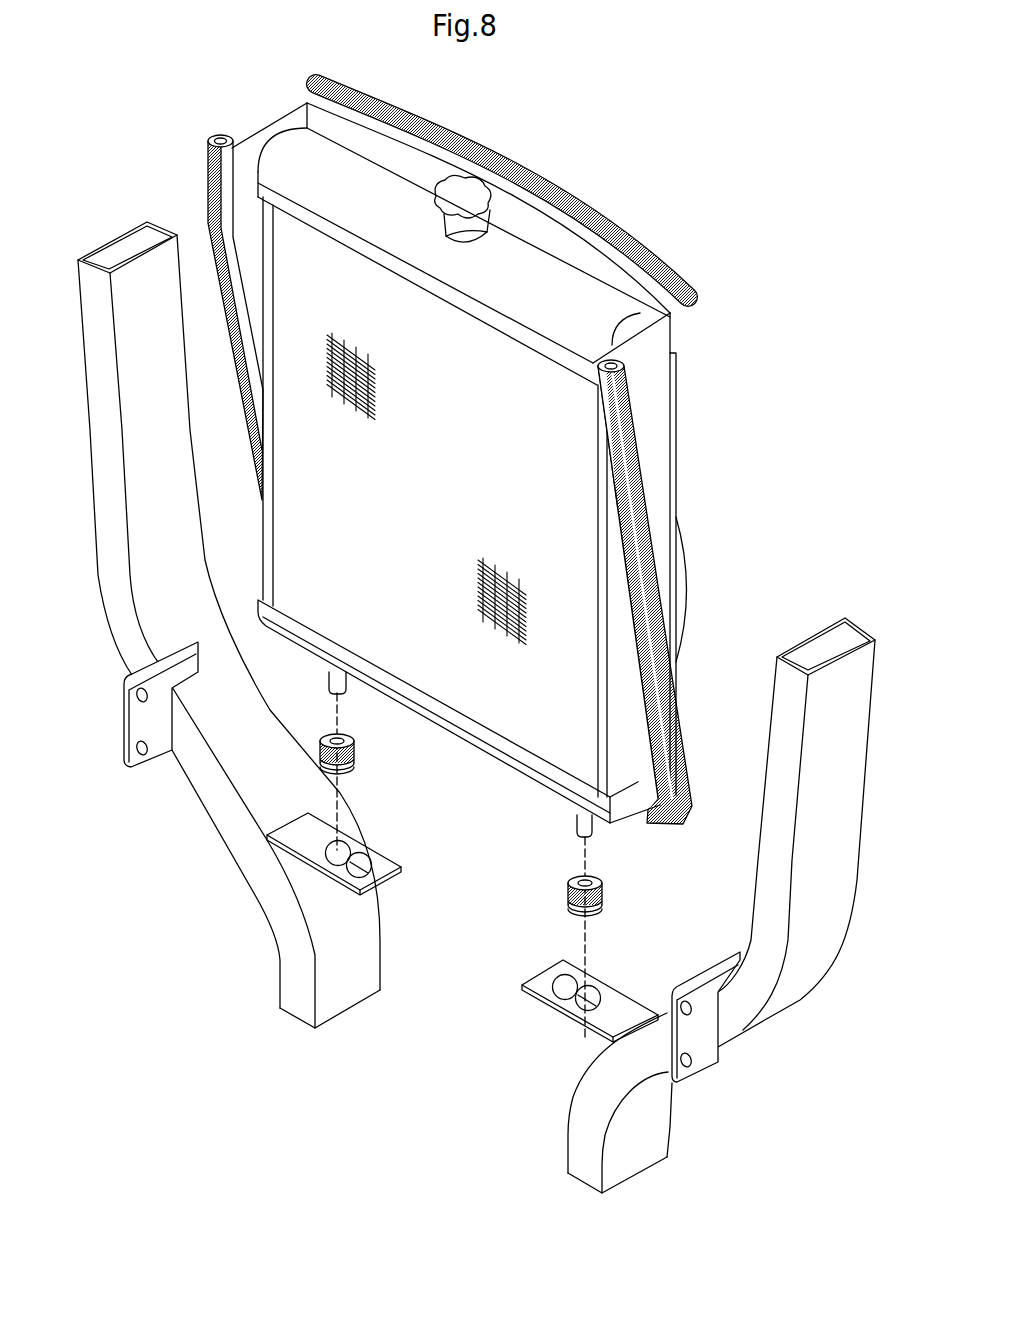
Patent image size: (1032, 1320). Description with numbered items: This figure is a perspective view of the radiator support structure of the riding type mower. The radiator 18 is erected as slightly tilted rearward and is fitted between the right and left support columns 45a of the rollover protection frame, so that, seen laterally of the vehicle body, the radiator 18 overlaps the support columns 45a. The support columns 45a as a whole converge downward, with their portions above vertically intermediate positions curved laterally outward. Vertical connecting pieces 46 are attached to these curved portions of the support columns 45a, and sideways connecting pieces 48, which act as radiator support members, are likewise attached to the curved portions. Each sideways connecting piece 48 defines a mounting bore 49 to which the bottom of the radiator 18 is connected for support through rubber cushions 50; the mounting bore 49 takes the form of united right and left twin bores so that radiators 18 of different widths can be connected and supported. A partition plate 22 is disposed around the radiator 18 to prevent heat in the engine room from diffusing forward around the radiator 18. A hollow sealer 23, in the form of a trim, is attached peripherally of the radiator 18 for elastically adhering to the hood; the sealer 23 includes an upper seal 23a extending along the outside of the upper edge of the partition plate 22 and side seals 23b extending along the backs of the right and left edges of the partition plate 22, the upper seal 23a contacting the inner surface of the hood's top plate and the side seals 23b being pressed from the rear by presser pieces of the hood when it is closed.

The radiator 18 is at (486, 757).
The partition plate 22 is at (668, 338).
The sealer 23 is at (438, 454).
The upper seal 23a is at (527, 185).
The side seal 23b is at (207, 177).
The support column 45a is at (114, 238).
The vertical connecting piece 46 is at (123, 728).
The sideways connecting piece 48 is at (386, 886).
The mounting bore 49 is at (352, 843).
The rubber cushion 50 is at (358, 748).